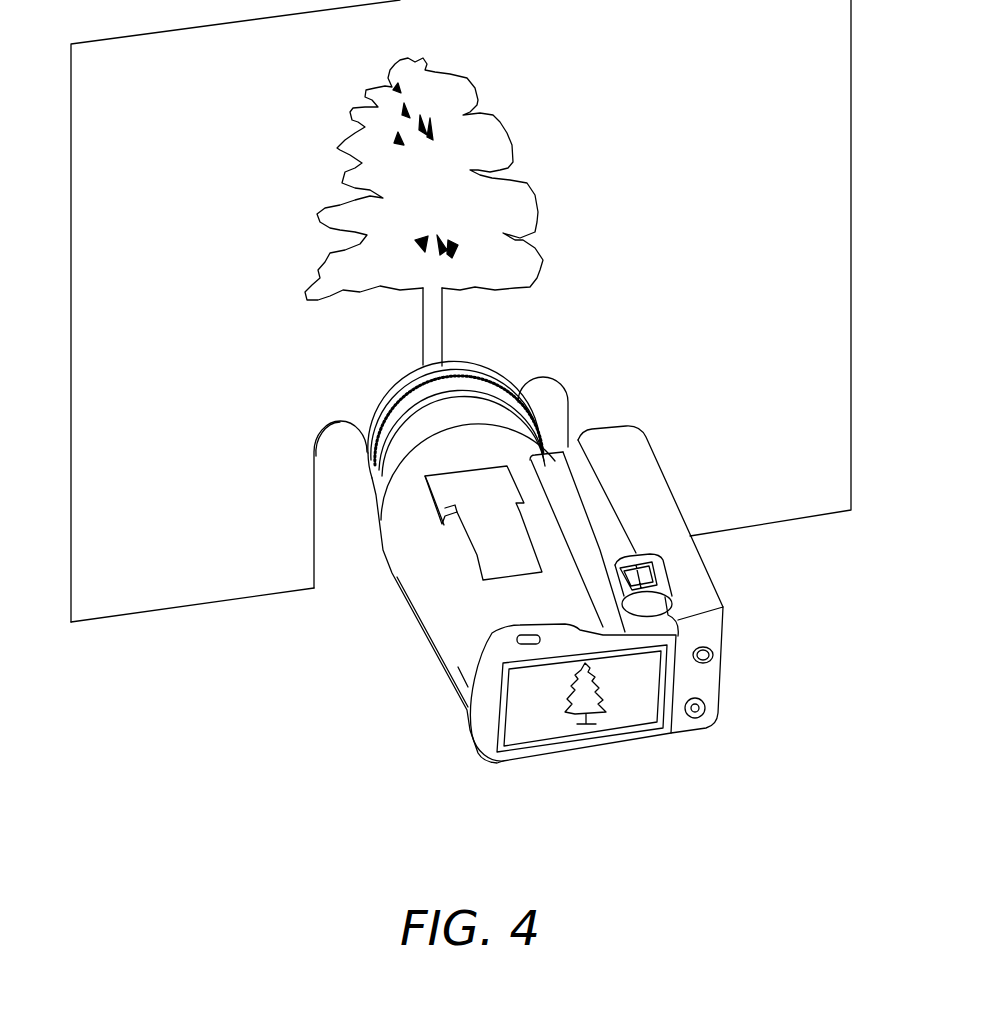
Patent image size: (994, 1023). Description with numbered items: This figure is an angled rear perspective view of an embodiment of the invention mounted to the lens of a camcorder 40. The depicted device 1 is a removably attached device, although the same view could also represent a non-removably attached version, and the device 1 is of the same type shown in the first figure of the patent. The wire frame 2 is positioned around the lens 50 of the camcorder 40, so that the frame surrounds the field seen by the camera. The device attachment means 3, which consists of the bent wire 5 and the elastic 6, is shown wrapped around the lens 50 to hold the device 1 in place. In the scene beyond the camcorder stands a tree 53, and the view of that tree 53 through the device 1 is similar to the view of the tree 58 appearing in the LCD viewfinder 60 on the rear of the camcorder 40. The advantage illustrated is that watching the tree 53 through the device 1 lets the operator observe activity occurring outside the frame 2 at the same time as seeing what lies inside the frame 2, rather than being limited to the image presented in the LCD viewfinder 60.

The device 1 is at (851, 68).
The wire frame 2 is at (79, 44).
The device attachment means 3 is at (340, 400).
The bent wire 5 is at (366, 433).
The elastic 6 is at (498, 388).
The camcorder 40 is at (724, 632).
The lens 50 is at (503, 415).
The tree 53 is at (507, 133).
The tree 58 is at (600, 670).
The LCD viewfinder 60 is at (547, 742).